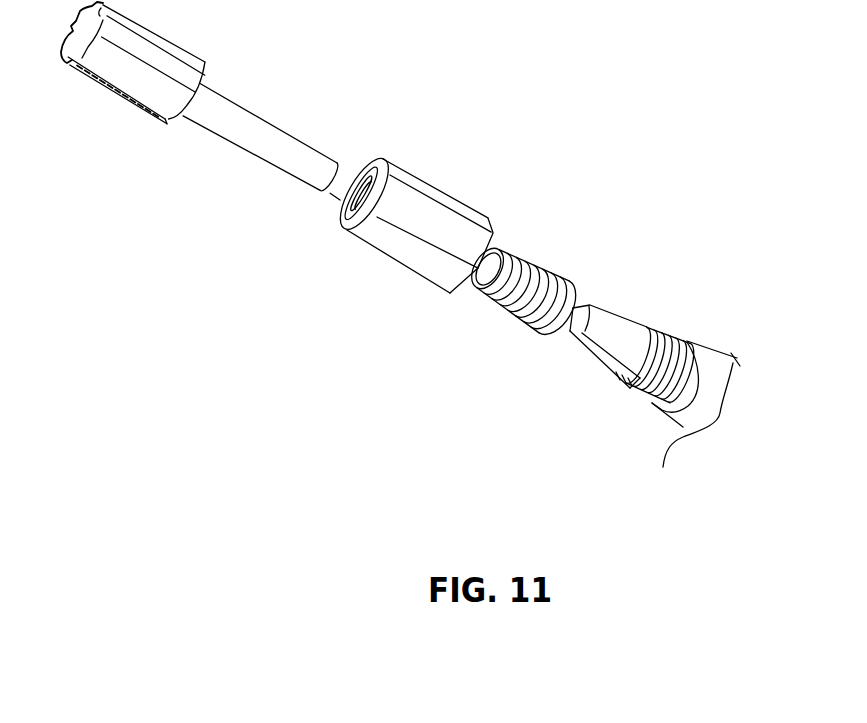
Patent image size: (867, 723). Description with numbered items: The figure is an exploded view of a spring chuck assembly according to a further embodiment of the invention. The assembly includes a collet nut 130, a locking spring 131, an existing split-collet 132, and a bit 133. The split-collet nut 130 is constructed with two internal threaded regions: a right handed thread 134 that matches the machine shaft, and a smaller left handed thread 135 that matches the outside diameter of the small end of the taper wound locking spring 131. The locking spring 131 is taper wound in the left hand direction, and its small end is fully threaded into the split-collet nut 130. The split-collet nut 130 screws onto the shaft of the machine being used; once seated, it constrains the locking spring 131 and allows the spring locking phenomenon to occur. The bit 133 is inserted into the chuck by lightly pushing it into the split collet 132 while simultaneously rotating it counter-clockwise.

The collet nut 130 is at (435, 305).
The locking spring 131 is at (584, 302).
The split-collet 132 is at (605, 392).
The bit 133 is at (228, 163).
The right handed thread 134 is at (495, 230).
The left handed thread 135 is at (347, 230).